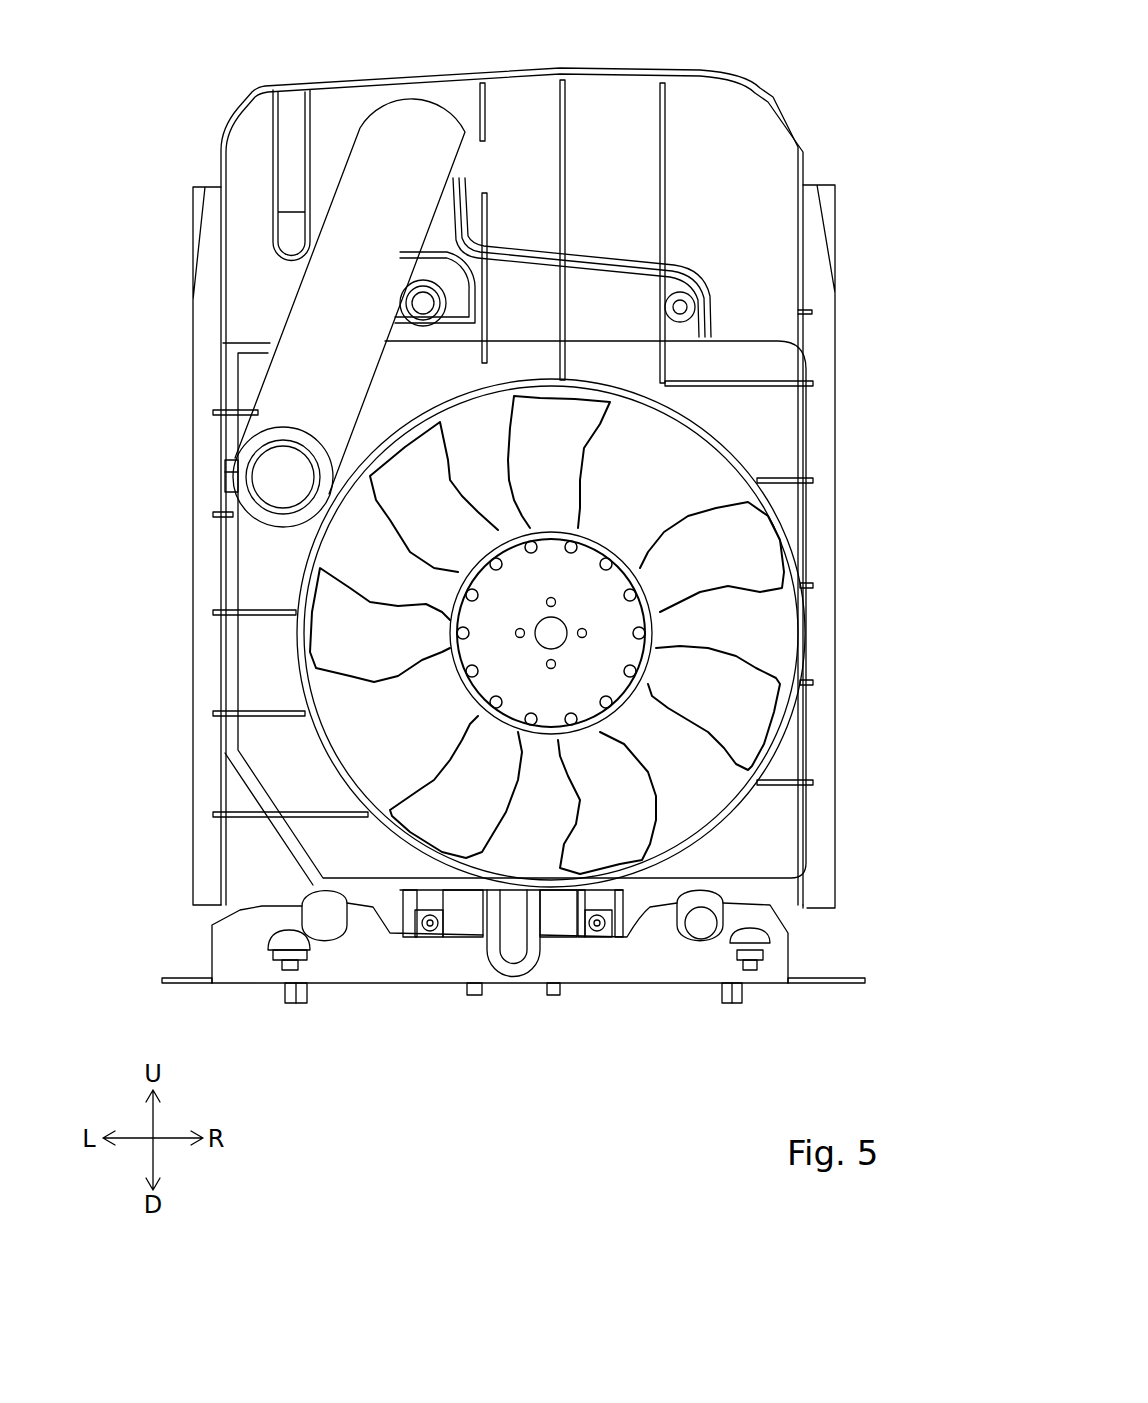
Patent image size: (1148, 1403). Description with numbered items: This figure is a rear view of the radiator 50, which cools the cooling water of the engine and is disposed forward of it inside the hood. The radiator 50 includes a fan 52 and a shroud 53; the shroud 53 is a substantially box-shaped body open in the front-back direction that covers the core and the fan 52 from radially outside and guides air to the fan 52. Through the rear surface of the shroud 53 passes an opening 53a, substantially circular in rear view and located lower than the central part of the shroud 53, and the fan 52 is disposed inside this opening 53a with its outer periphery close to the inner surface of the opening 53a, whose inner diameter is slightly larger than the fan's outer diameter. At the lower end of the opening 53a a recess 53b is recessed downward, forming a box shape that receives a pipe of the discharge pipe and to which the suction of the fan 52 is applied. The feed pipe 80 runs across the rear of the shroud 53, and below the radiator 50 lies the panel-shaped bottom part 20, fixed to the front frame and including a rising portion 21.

The radiator 50 is at (525, 562).
The shroud 53 is at (757, 150).
The opening 53a is at (325, 687).
The recess 53b is at (572, 862).
The fan 52 is at (750, 548).
The feed pipe 80 is at (380, 193).
The bottom part 20 is at (835, 980).
The rising portion 21 is at (673, 965).